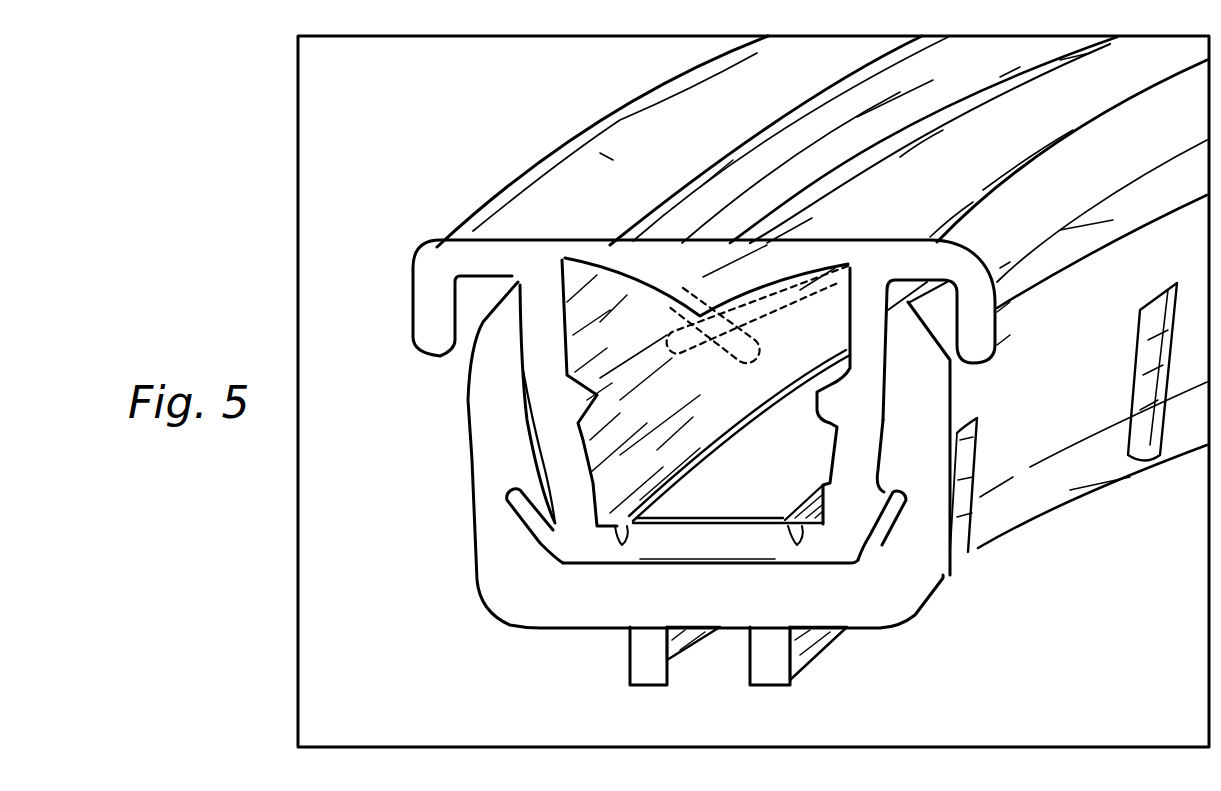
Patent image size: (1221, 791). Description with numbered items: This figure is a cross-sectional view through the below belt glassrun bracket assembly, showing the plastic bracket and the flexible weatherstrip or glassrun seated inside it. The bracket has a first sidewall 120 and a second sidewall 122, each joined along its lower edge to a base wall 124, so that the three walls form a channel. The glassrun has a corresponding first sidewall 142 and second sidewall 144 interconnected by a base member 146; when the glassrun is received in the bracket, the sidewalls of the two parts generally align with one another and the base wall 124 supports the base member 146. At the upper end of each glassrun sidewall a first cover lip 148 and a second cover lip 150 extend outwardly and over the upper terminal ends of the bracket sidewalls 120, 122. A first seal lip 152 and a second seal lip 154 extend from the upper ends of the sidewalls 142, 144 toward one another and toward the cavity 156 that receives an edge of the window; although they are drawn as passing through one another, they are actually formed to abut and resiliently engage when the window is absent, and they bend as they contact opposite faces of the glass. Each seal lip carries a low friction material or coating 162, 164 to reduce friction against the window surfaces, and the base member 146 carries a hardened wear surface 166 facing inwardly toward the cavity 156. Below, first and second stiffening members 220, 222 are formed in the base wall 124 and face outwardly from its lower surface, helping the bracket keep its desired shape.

The first sidewall 120 is at (490, 470).
The second sidewall 122 is at (925, 433).
The base wall 124 is at (570, 607).
The first sidewall 142 is at (540, 417).
The second sidewall 144 is at (870, 343).
The base member 146 is at (640, 545).
The first cover lip 148 is at (427, 313).
The second cover lip 150 is at (1043, 283).
The first seal lip 152 is at (678, 299).
The second seal lip 154 is at (767, 303).
The cavity 156 is at (648, 440).
The low friction material or coating 162 is at (787, 153).
The low friction material or coating 164 is at (670, 323).
The hardened wear surface 166 is at (713, 500).
The first stiffening member 220 is at (675, 648).
The second stiffening member 222 is at (817, 653).